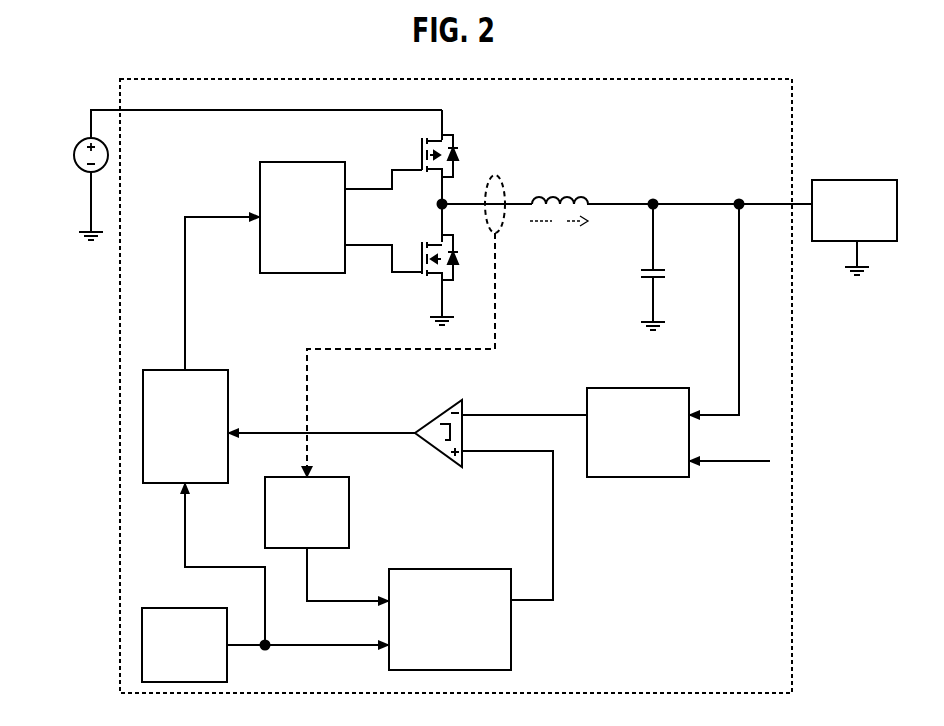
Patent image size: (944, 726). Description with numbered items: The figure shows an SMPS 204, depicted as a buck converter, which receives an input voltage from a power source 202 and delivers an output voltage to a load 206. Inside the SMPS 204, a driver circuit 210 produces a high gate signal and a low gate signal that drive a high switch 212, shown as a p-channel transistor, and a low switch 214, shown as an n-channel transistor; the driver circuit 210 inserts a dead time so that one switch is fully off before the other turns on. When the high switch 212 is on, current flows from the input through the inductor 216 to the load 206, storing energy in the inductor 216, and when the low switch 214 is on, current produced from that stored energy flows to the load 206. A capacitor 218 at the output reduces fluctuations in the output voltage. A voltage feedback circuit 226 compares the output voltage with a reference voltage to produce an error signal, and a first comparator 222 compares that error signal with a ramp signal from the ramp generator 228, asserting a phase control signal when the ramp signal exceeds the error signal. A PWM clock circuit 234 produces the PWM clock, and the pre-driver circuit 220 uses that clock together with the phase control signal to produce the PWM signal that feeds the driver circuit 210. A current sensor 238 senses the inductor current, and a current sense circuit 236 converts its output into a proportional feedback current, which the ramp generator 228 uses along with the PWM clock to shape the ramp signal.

The power source 202 is at (77, 146).
The SMPS 204 is at (637, 79).
The load 206 is at (852, 180).
The driver circuit 210 is at (292, 162).
The high switch 212 is at (420, 143).
The low switch 214 is at (422, 275).
The inductor 216 is at (572, 197).
The capacitor 218 is at (645, 277).
The pre-driver circuit 220 is at (205, 370).
The first comparator 222 is at (440, 416).
The voltage feedback circuit 226 is at (658, 388).
The ramp generator 228 is at (465, 569).
The PWM clock circuit 234 is at (183, 608).
The current sense circuit 236 is at (349, 504).
The current sensor 238 is at (501, 178).